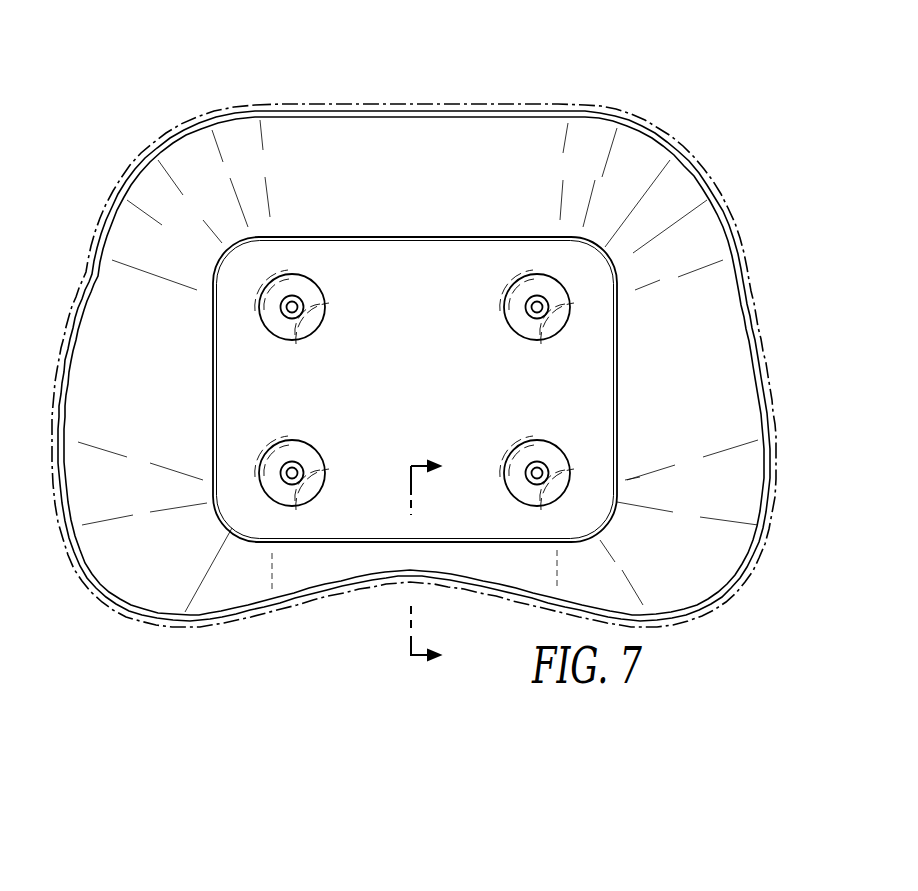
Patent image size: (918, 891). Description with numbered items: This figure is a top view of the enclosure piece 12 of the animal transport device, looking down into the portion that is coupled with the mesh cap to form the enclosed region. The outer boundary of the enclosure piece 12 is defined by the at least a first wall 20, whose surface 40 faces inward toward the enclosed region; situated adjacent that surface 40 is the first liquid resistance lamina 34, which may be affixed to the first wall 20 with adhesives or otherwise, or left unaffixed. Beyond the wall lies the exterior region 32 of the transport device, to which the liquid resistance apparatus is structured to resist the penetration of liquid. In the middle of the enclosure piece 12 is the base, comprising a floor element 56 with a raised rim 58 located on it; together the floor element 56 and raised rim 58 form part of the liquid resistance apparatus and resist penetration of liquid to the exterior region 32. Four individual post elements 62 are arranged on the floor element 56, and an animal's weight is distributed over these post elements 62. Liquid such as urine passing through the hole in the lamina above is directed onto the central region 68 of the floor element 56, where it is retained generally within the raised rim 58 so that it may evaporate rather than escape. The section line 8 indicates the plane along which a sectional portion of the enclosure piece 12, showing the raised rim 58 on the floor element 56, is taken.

The enclosure piece 12 is at (433, 320).
The first wall 20 is at (410, 107).
The exterior region 32 is at (98, 106).
The first liquid resistance lamina 34 is at (86, 383).
The surface 40 is at (104, 316).
The floor element 56 is at (415, 359).
The raised rim 58 is at (458, 541).
The post elements 62 is at (323, 300).
The central region 68 is at (441, 401).
The section line 8- 8 is at (409, 559).